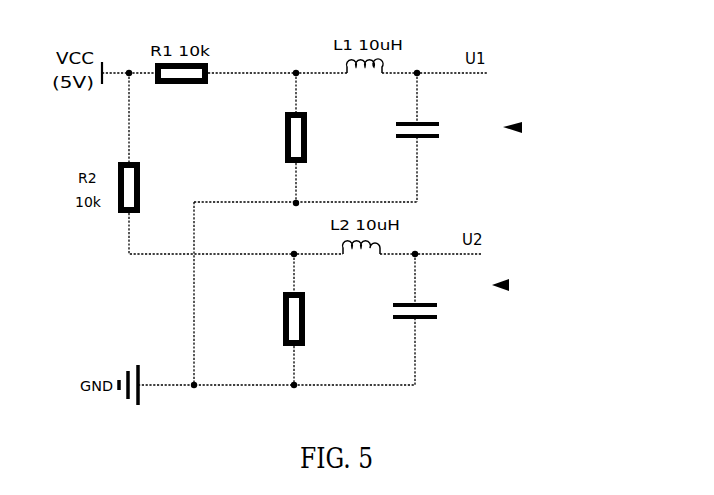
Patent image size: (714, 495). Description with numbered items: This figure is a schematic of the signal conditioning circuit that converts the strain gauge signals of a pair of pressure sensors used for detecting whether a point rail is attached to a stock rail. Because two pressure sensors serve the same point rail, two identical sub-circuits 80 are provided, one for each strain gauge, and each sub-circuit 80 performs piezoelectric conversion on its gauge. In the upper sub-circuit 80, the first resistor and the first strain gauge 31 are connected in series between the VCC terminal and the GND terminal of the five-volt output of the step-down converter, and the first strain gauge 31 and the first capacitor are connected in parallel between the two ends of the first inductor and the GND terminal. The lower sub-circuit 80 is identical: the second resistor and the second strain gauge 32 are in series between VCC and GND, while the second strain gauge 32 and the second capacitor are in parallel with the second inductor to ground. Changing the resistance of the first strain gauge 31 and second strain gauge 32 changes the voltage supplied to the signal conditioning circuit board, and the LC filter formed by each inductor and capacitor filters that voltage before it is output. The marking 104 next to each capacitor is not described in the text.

The first strain gauge 31 is at (268, 138).
The second strain gauge 32 is at (269, 319).
The sub-circuit 80 is at (521, 130).
The capacitor 104 is at (438, 229).